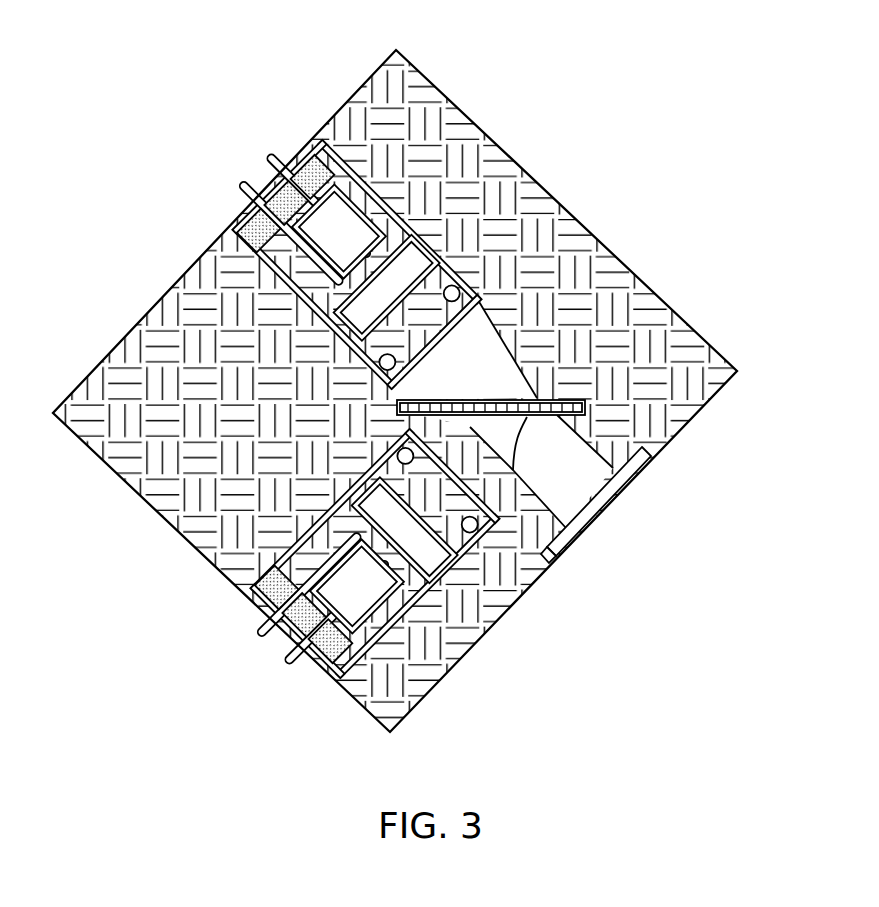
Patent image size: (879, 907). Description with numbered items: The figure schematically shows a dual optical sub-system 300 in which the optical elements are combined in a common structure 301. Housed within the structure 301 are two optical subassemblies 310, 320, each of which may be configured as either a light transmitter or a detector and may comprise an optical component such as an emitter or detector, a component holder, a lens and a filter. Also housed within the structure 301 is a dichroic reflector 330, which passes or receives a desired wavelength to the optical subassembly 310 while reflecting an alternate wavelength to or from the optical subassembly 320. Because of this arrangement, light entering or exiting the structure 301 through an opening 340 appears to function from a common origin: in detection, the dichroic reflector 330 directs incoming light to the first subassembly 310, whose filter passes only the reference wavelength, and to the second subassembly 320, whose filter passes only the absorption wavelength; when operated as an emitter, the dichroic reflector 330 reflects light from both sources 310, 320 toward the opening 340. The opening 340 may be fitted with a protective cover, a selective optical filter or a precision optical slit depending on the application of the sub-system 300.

The dual optical sub-system 300 is at (424, 378).
The common structure 301 is at (617, 308).
The optical subassembly 310 is at (432, 183).
The optical subassembly 320 is at (283, 470).
The dichroic reflector 330 is at (575, 405).
The opening 340 is at (668, 517).